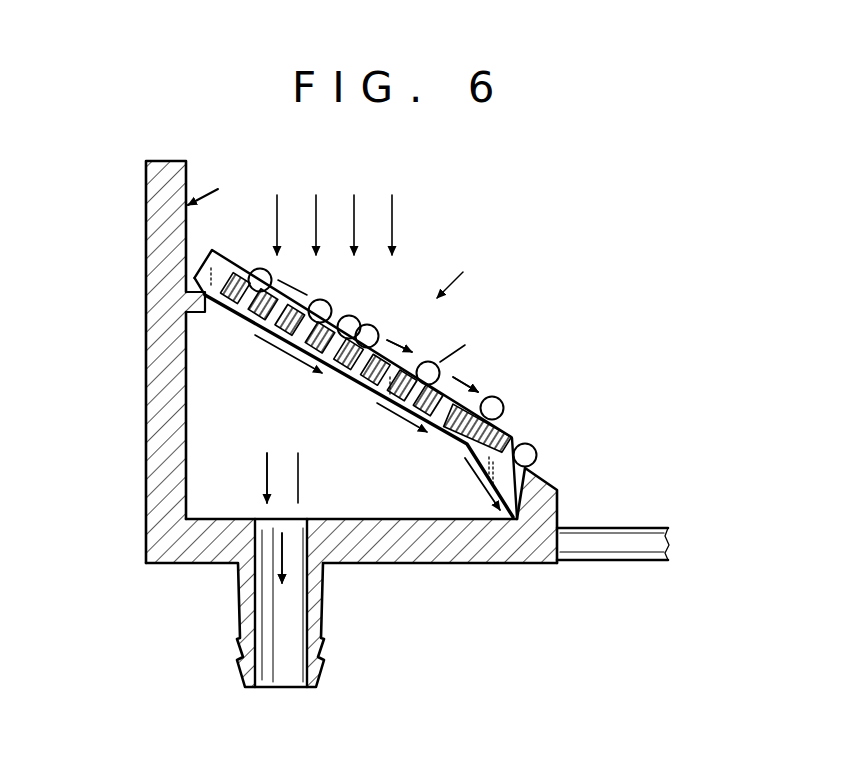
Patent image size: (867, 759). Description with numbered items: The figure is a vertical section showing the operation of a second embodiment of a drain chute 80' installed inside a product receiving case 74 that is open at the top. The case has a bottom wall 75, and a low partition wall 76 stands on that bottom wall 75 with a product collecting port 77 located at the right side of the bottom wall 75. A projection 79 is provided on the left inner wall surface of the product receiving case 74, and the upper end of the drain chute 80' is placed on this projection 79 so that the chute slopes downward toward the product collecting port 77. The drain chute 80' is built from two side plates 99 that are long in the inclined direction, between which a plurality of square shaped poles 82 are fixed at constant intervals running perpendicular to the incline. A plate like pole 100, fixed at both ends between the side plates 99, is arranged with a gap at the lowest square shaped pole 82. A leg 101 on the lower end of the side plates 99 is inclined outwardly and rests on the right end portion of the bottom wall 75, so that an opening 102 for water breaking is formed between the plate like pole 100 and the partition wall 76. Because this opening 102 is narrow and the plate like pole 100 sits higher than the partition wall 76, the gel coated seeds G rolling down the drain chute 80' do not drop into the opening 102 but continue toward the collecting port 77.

The product receiving case 74 is at (160, 236).
The bottom wall 75 is at (441, 552).
The low partition wall 76 is at (550, 483).
The product collecting port 77 is at (617, 544).
The projection 79 is at (204, 310).
The drain chute 80' is at (471, 273).
The square shaped pole 82 is at (380, 381).
The side plate 99 is at (228, 265).
The plate like pole 100 is at (505, 422).
The leg 101 is at (507, 497).
The opening for water breaking 102 is at (520, 445).
The gel coated seeds G is at (358, 326).